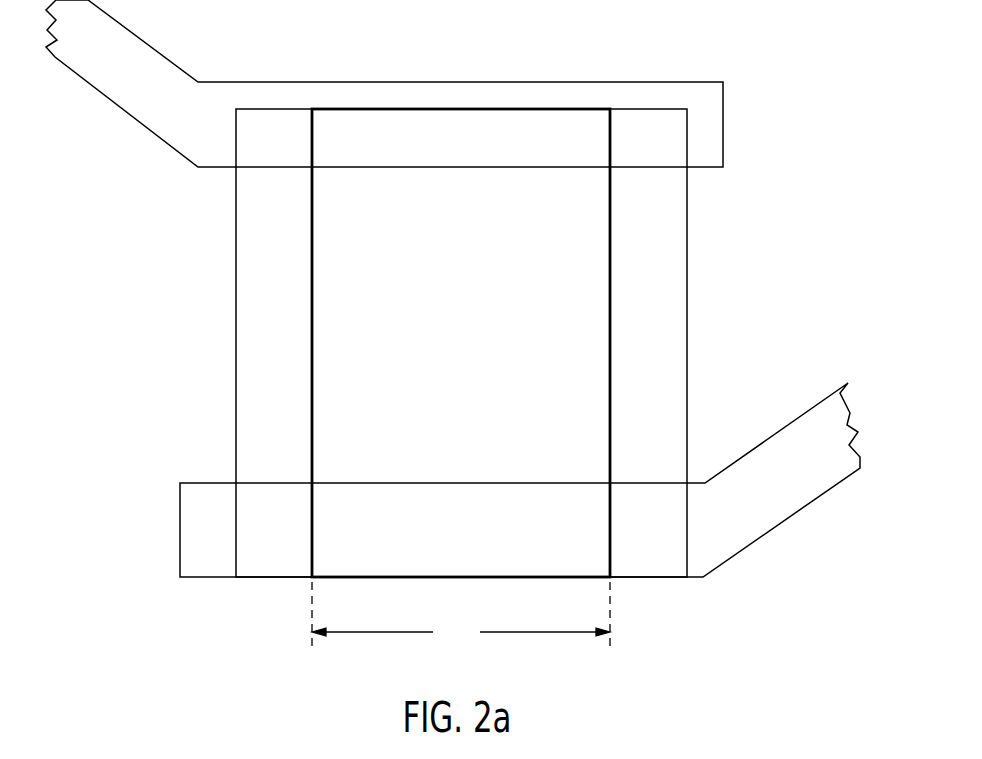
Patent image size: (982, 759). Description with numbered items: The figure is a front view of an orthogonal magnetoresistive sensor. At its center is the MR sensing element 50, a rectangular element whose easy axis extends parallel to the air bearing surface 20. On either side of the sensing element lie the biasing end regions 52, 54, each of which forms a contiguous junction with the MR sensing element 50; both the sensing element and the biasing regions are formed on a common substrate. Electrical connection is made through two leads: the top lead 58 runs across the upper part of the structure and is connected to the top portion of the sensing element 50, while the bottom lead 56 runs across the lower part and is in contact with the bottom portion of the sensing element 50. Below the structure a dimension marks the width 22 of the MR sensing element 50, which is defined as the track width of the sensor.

The air bearing surface 20 is at (449, 372).
The width 22 is at (461, 617).
The MR sensing element 50 is at (583, 250).
The biasing end region 52 is at (663, 390).
The biasing end region 54 is at (260, 402).
The bottom lead 56 is at (807, 493).
The top lead 58 is at (627, 93).